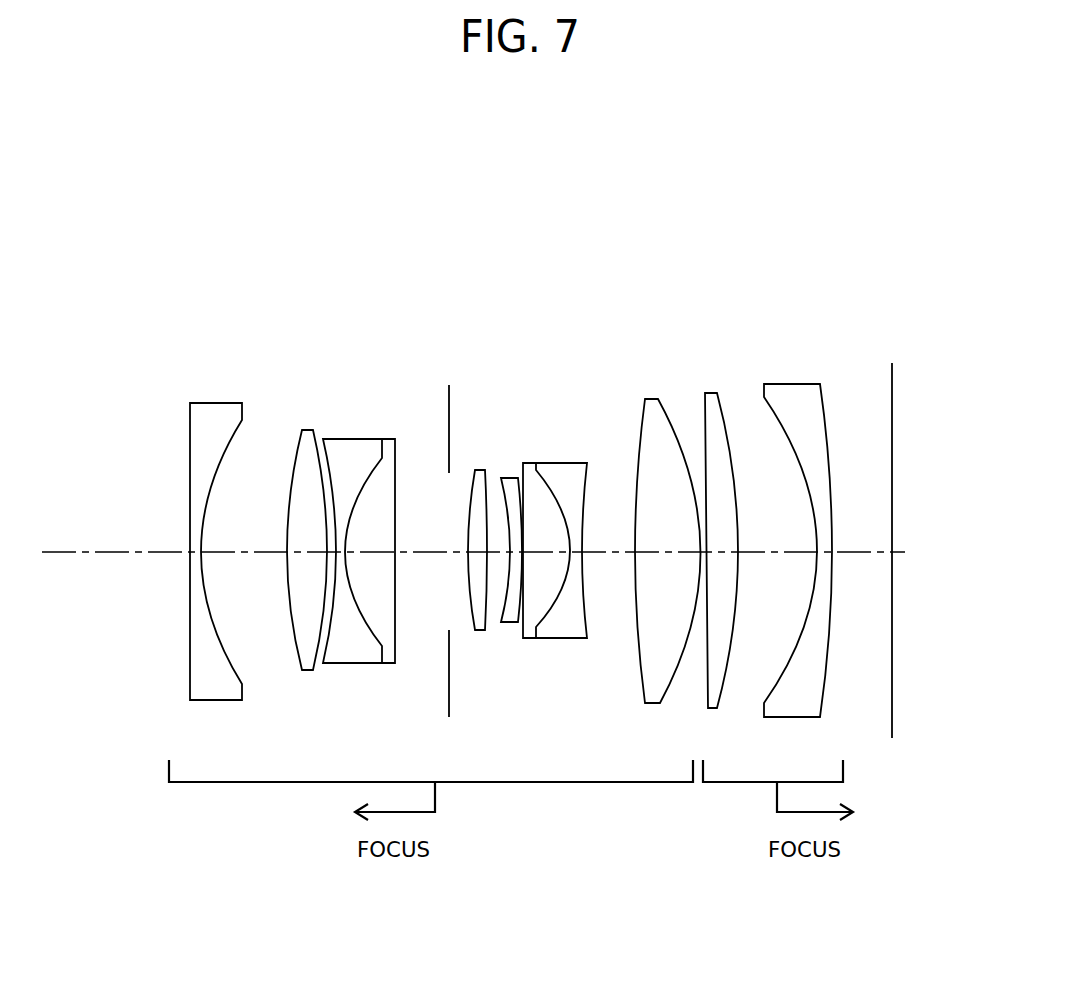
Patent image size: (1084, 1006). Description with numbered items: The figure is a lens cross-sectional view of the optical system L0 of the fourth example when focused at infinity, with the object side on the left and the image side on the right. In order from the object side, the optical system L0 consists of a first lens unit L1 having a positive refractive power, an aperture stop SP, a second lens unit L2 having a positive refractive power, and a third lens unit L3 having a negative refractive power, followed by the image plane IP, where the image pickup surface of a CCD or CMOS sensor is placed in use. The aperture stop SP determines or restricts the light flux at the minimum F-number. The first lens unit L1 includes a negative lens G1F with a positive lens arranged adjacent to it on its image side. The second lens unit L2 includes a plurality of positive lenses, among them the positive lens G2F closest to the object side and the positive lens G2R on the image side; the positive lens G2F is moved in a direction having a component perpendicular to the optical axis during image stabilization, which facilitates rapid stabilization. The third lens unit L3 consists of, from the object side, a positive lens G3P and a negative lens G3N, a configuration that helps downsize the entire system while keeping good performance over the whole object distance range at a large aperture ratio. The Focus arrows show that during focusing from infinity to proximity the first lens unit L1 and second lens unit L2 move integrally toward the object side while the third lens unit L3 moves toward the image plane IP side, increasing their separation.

The optical system L0 is at (499, 475).
The first lens unit L1 is at (291, 494).
The second lens unit L2 is at (580, 494).
The third lens unit L3 is at (767, 501).
The negative lens G1F is at (202, 423).
The positive lens G2F is at (481, 483).
The positive lens G2R is at (658, 413).
The positive lens G3P is at (712, 398).
The negative lens G3N is at (800, 403).
The aperture stop SP is at (447, 680).
The image plane IP is at (896, 477).